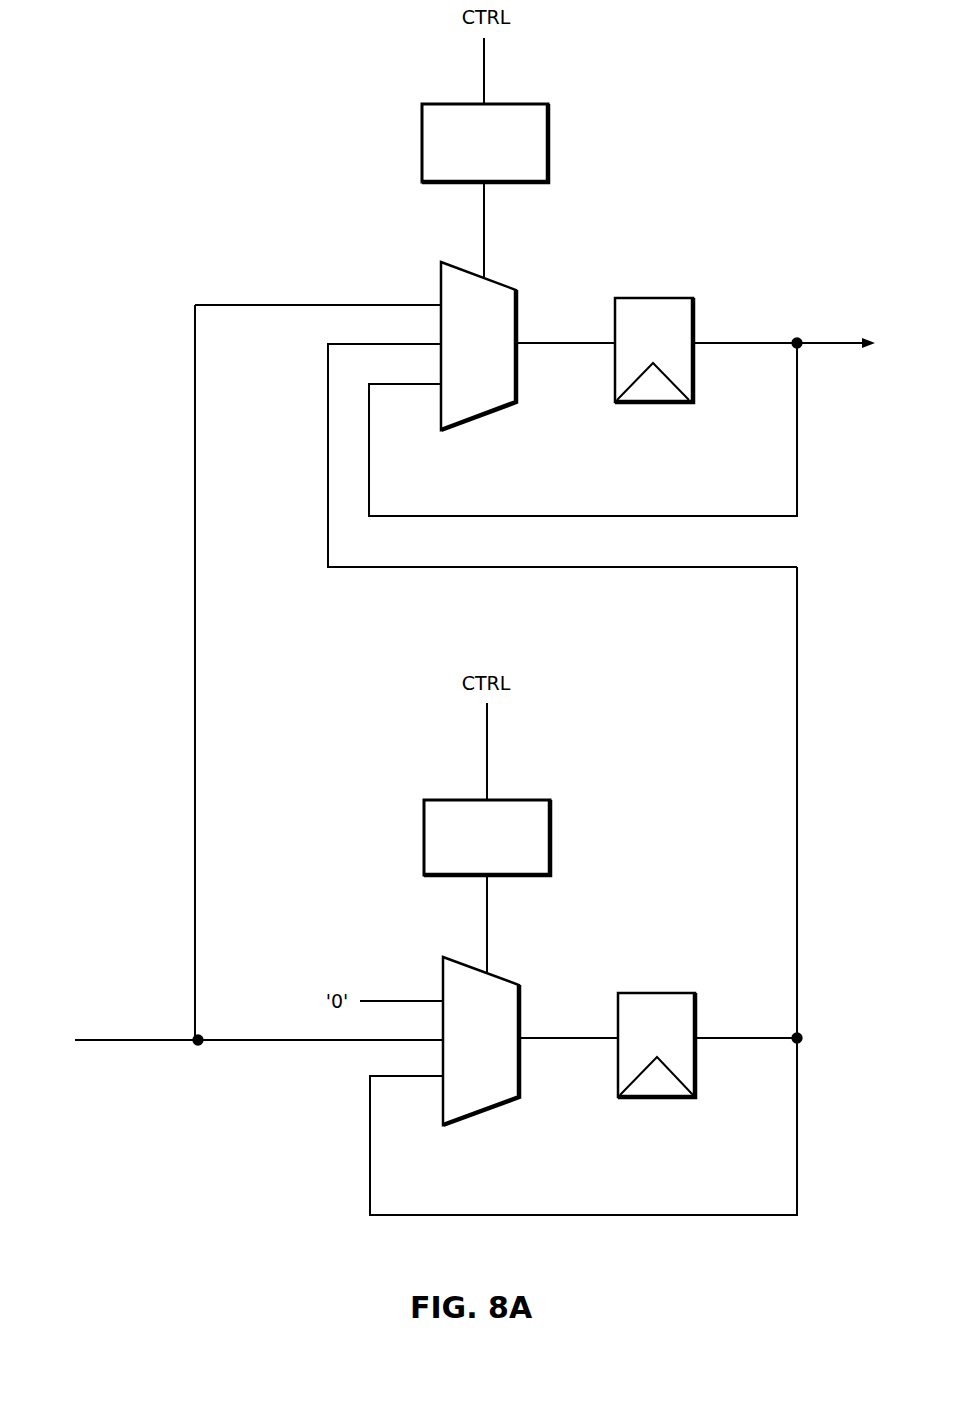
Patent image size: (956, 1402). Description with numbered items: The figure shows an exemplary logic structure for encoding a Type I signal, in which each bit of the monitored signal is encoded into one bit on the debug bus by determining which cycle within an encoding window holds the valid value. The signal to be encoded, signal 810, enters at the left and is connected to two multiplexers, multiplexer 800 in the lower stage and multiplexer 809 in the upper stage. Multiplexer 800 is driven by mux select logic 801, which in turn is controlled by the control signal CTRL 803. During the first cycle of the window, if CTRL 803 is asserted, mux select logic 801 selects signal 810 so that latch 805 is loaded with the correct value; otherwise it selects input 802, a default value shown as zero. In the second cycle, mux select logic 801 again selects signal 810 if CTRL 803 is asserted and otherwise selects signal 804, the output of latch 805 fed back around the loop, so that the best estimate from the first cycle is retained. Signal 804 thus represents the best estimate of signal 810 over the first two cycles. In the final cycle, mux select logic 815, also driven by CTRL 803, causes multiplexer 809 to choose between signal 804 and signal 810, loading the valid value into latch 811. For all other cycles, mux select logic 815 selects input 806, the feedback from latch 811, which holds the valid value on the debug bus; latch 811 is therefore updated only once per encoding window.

The multiplexer 800 is at (510, 977).
The mux select logic 801 is at (550, 835).
The default value input 802 is at (398, 1000).
The CTRL signal 803 is at (484, 68).
The latch output signal 804 is at (347, 343).
The latch 805 is at (673, 993).
The feedback input 806 is at (394, 385).
The multiplexer 809 is at (510, 288).
The signal to be encoded 810 is at (115, 1041).
The latch 811 is at (670, 298).
The mux select logic 815 is at (548, 135).